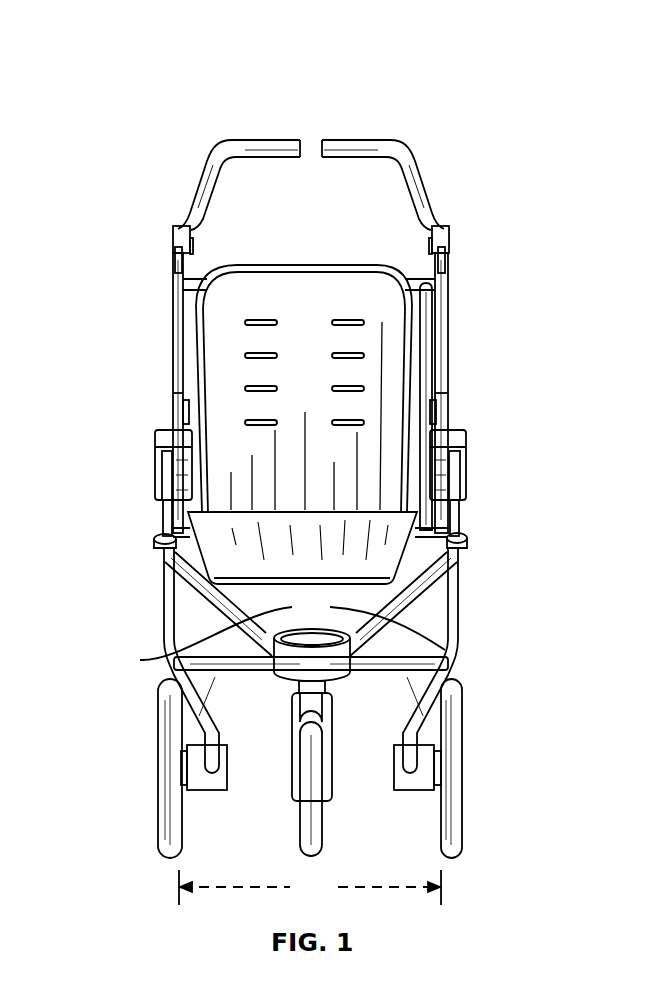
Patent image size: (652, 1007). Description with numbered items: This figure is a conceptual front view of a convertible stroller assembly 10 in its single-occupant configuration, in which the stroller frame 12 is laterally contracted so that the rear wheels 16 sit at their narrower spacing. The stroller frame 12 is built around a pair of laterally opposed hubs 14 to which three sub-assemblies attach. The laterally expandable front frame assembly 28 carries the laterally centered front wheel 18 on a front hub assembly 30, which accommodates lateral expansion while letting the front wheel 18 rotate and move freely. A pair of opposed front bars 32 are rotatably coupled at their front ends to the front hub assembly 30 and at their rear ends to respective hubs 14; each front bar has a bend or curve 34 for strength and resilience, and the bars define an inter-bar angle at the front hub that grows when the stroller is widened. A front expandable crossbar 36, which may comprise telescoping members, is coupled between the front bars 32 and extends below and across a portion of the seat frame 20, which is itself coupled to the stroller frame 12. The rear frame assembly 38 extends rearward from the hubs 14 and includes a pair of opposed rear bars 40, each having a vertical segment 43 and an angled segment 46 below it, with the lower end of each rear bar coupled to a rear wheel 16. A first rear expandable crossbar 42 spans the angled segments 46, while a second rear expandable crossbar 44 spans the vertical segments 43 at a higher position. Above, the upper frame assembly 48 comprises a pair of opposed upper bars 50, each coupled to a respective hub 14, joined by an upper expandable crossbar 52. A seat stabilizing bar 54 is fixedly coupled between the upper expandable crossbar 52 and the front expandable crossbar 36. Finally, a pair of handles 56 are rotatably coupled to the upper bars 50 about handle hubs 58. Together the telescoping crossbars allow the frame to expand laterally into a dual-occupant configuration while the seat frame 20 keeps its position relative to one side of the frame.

The convertible stroller assembly 10 is at (185, 70).
The stroller frame 12 is at (168, 326).
The laterally opposed hubs 14 is at (468, 448).
The rear wheels 16 is at (462, 831).
The front wheel 18 is at (322, 852).
The seat frame 20 is at (253, 373).
The front frame assembly 28 is at (443, 609).
The front hub assembly 30 is at (288, 663).
The opposed front bars 32 is at (140, 660).
The bend or curve 34 is at (166, 573).
The front expandable crossbar 36 is at (458, 556).
The rear frame assembly 38 is at (158, 618).
The opposed rear bars 40 is at (449, 669).
The first rear expandable crossbar 42 is at (437, 746).
The vertical segment 43 is at (462, 598).
The second rear expandable crossbar 44 is at (443, 532).
The angled segment 46 is at (442, 691).
The upper frame assembly 48 is at (458, 378).
The opposed upper bars 50 is at (449, 330).
The upper expandable crossbar 52 is at (401, 276).
The seat stabilizing bar 54 is at (434, 300).
The handles 56 is at (396, 140).
The handle hubs 58 is at (450, 237).